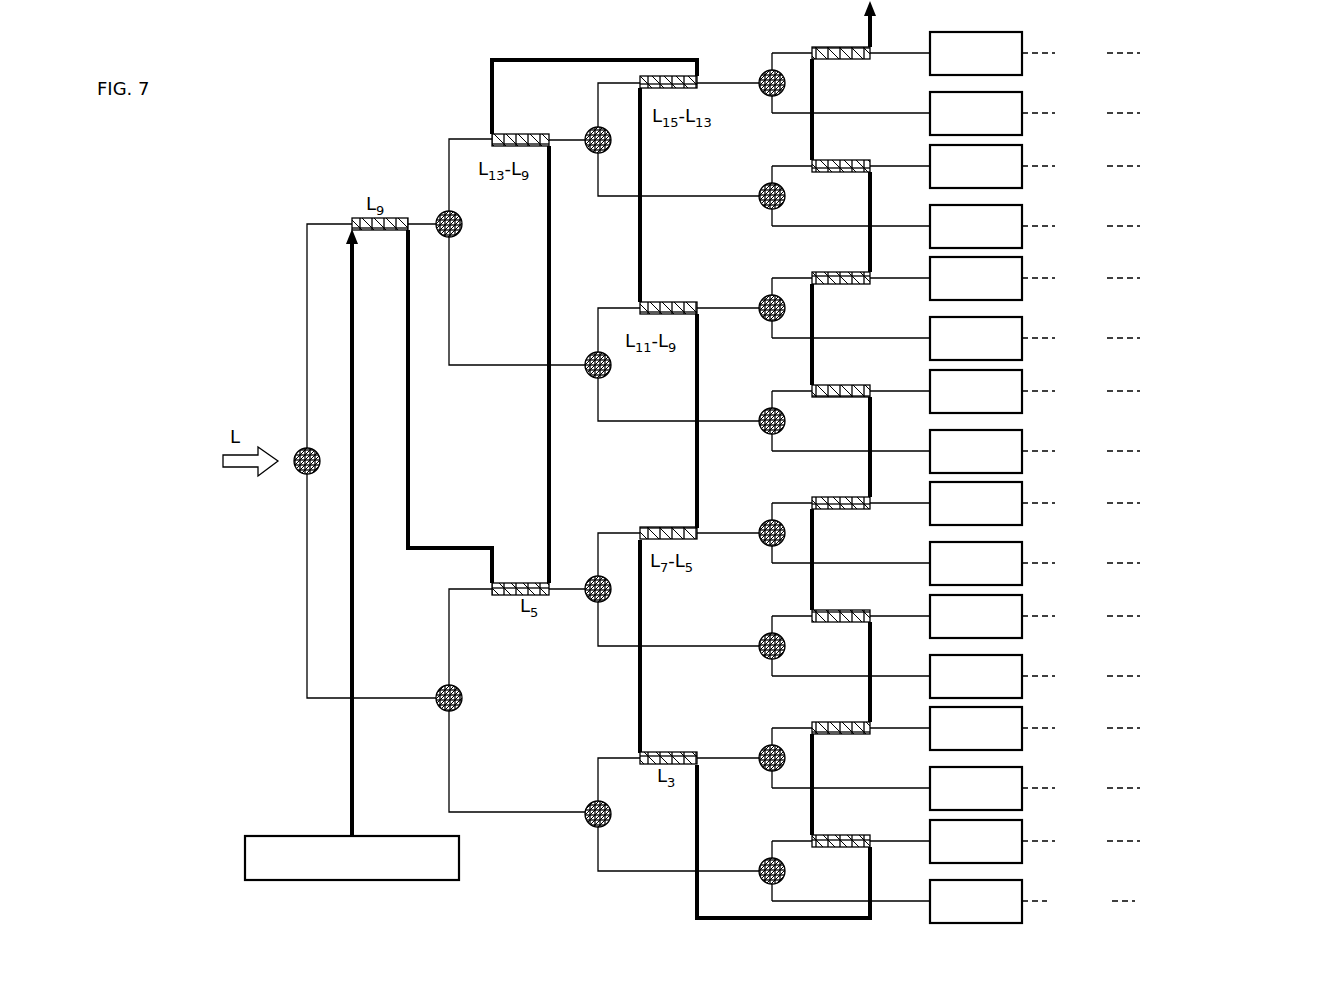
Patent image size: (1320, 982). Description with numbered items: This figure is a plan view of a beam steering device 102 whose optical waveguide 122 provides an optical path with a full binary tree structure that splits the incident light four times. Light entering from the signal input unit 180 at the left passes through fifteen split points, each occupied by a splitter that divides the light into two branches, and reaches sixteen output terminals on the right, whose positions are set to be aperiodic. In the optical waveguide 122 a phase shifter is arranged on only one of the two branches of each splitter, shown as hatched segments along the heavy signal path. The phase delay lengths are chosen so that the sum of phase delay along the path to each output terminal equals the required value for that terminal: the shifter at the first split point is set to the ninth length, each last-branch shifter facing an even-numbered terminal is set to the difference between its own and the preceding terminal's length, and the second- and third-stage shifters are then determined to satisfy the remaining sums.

The beam steering device 102 is at (1005, 475).
The optical waveguide 122 is at (319, 217).
The signal input unit 180 is at (380, 836).